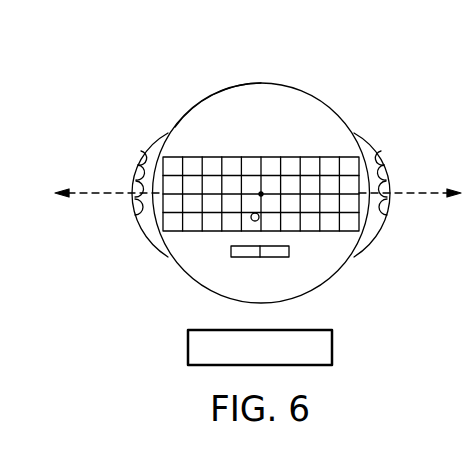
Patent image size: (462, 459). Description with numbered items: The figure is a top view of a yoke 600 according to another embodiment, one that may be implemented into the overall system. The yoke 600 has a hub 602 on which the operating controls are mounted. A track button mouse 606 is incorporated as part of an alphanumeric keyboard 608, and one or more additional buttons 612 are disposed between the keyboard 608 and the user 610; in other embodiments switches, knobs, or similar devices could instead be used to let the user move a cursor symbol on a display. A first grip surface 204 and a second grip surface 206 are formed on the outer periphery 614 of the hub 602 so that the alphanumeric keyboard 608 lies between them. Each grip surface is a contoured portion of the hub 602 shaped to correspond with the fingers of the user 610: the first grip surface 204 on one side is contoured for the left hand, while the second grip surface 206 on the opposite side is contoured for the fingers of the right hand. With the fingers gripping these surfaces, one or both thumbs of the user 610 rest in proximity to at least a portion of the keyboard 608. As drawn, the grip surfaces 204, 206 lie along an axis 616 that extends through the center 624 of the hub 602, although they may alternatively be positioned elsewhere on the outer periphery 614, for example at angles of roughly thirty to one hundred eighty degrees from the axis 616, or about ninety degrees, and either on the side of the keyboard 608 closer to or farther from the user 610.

The yoke 600 is at (348, 77).
The hub 602 is at (330, 113).
The track button mouse 606 is at (256, 221).
The alphanumeric keyboard 608 is at (312, 232).
The user 610 is at (332, 348).
The buttons 612 is at (234, 257).
The outer periphery 614 is at (220, 92).
The axis 616 is at (430, 196).
The center 624 is at (262, 194).
The first grip surface 204 is at (138, 177).
The second grip surface 206 is at (386, 176).